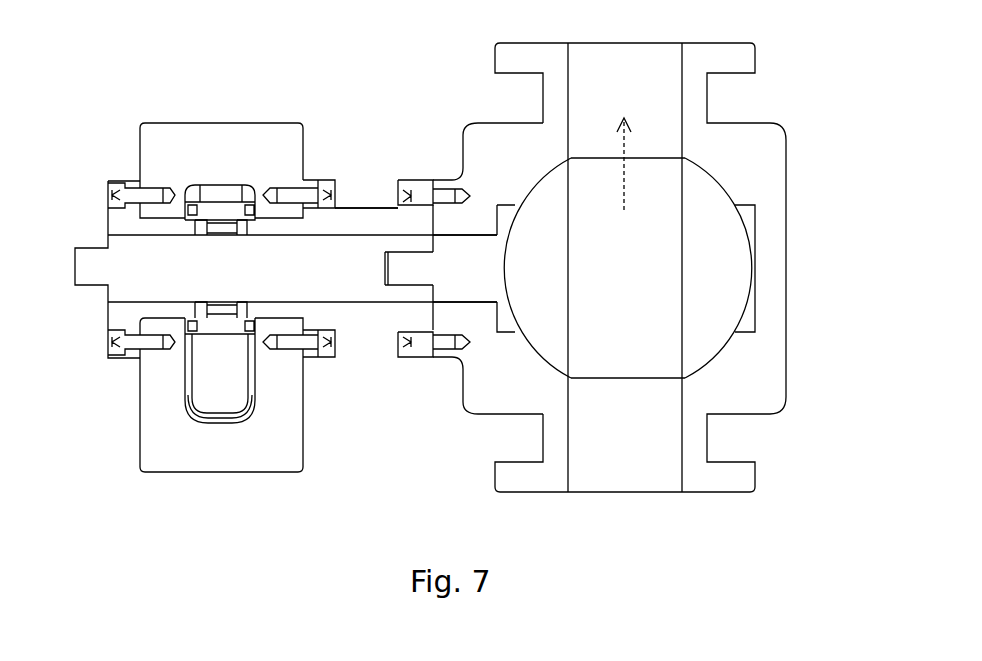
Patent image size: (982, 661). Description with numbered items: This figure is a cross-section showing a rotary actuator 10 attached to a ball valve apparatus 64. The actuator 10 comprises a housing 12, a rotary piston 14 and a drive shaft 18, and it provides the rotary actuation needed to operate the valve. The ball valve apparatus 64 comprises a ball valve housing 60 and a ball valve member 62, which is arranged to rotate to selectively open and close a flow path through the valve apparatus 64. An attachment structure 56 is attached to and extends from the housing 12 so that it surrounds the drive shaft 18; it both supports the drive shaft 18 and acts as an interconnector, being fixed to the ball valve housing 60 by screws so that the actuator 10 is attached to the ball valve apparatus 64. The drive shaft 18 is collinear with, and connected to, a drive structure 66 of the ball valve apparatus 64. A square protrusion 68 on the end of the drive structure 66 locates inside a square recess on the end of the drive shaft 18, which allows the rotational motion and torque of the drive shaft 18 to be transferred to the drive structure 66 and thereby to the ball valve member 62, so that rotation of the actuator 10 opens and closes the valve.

The rotary actuator 10 is at (329, 457).
The housing 12 is at (228, 166).
The rotary piston 14 is at (197, 378).
The drive shaft 18 is at (283, 281).
The attachment structure 56 is at (367, 223).
The ball valve housing 60 is at (762, 153).
The ball valve member 62 is at (698, 353).
The ball valve apparatus 64 is at (455, 463).
The drive structure 66 is at (455, 279).
The square protrusion 68 is at (400, 279).